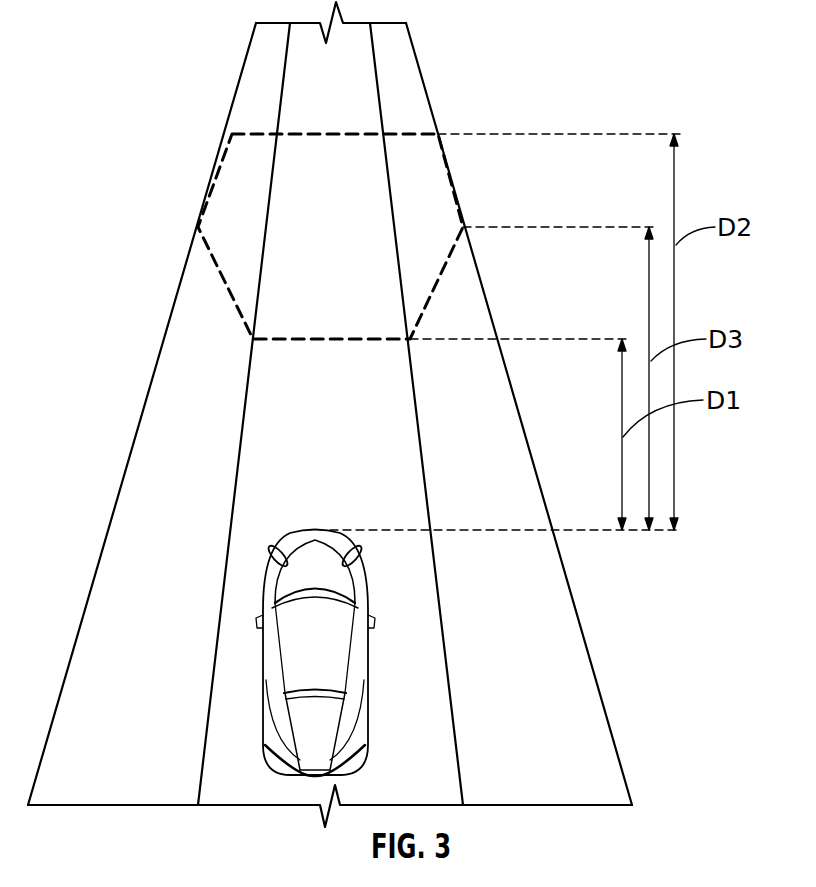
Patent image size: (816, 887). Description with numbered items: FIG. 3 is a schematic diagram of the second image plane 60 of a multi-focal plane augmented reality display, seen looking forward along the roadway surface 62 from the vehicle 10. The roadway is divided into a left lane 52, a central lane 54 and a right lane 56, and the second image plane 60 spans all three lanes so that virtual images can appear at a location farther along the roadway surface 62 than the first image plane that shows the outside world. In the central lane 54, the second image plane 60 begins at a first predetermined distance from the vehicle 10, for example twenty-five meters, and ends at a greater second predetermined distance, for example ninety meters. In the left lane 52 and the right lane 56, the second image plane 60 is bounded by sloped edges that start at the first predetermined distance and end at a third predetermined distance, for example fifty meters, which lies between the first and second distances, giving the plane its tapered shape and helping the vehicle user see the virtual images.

The vehicle 10 is at (295, 573).
The left lane 52 is at (158, 435).
The central lane 54 is at (395, 490).
The right lane 56 is at (495, 412).
The second image plane 60 is at (247, 132).
The roadway surface 62 is at (307, 407).